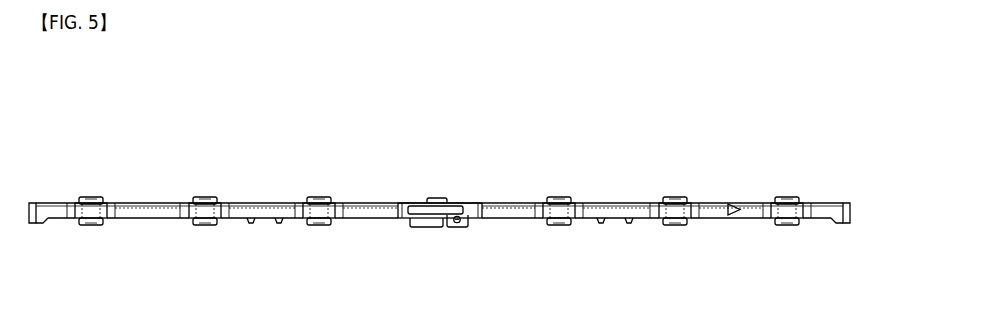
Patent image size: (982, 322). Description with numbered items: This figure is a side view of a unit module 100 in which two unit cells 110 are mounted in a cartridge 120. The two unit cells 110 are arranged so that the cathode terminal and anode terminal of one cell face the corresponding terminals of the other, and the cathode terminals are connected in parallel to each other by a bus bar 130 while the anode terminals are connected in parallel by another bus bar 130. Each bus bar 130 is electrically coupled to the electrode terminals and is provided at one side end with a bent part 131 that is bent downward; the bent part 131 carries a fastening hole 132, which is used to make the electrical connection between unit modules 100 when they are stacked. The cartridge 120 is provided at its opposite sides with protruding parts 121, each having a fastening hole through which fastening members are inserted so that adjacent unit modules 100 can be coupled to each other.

The unit module 100 is at (97, 138).
The unit cell 110 is at (160, 203).
The cartridge 120 is at (147, 218).
The protruding part 121 is at (80, 225).
The bus bar 130 is at (420, 232).
The bent part 131 is at (452, 228).
The fastening hole 132 is at (469, 203).